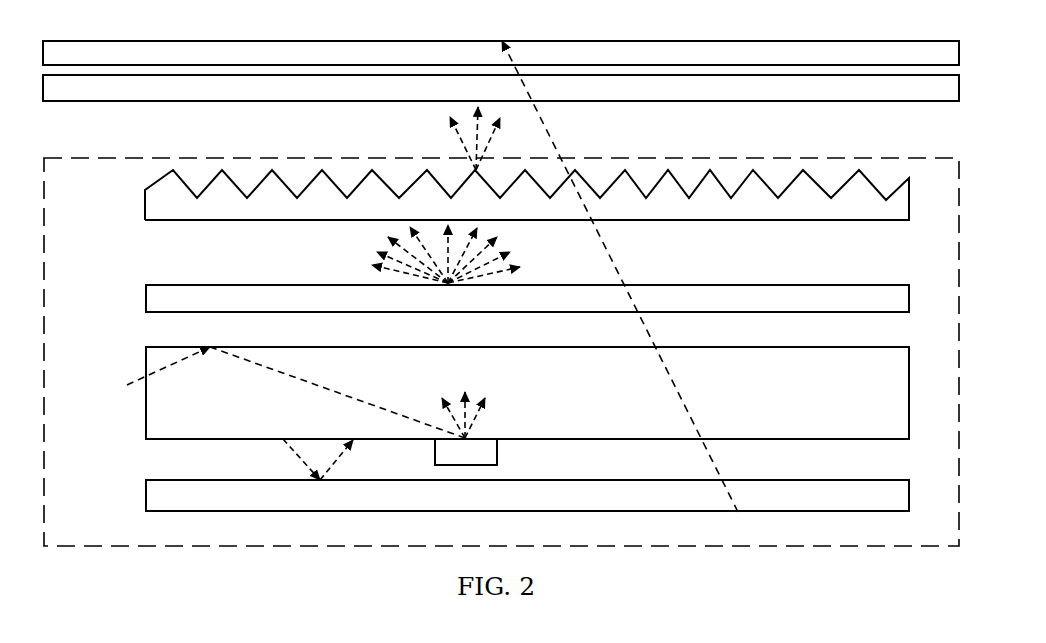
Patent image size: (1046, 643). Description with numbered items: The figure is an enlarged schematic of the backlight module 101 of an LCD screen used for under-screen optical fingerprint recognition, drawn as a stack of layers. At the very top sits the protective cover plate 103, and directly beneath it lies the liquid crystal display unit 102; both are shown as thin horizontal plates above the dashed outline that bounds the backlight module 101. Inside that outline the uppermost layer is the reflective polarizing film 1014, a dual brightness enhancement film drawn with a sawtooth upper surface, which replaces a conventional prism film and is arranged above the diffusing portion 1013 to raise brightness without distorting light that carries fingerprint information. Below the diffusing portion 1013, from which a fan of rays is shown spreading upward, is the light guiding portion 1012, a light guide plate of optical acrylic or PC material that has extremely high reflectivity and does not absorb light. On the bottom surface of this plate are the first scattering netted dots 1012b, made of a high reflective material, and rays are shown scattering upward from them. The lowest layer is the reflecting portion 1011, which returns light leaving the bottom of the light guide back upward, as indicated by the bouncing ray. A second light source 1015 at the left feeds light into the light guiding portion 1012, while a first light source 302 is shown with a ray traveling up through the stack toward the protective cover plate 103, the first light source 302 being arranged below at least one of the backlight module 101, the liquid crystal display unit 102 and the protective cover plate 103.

The protective cover plate 103 is at (501, 53).
The liquid crystal display unit 102 is at (501, 88).
The backlight module 101 is at (501, 352).
The reflective polarizing film 1014 is at (527, 163).
The diffusing portion 1013 is at (527, 268).
The light guiding portion 1012 is at (527, 393).
The first scattering netted dots 1012b is at (466, 428).
The reflecting portion 1011 is at (527, 475).
The second light source 1015 is at (269, 392).
The first light source 302 is at (648, 287).